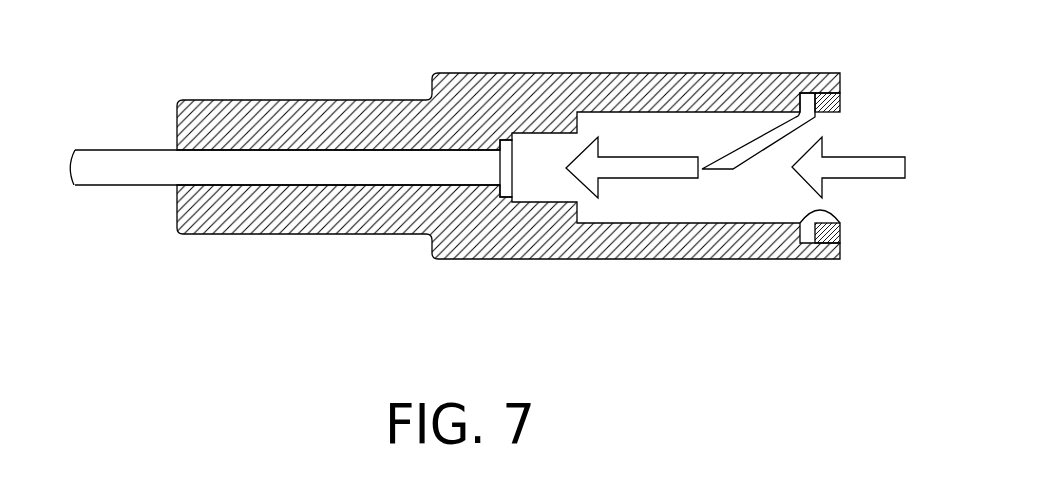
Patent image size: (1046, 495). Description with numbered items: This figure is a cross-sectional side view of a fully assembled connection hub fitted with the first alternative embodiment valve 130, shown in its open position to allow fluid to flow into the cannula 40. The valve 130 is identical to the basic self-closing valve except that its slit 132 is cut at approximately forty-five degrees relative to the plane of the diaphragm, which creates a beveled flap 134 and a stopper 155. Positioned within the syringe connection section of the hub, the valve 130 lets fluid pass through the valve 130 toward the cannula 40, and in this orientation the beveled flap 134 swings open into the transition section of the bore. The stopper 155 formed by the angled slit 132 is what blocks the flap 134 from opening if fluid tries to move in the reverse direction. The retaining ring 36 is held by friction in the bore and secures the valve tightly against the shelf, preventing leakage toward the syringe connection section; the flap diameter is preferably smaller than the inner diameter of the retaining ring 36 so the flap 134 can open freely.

The retaining ring 36 is at (838, 93).
The cannula 40 is at (131, 160).
The first alternative valve 130 is at (750, 177).
The slit 132 is at (840, 225).
The beveled flap 134 is at (762, 138).
The stopper 155 is at (800, 228).